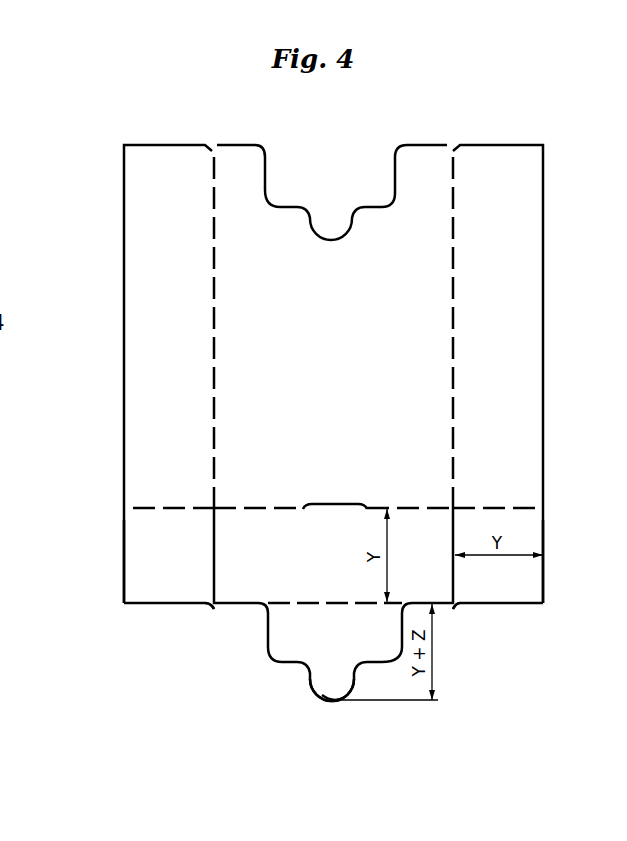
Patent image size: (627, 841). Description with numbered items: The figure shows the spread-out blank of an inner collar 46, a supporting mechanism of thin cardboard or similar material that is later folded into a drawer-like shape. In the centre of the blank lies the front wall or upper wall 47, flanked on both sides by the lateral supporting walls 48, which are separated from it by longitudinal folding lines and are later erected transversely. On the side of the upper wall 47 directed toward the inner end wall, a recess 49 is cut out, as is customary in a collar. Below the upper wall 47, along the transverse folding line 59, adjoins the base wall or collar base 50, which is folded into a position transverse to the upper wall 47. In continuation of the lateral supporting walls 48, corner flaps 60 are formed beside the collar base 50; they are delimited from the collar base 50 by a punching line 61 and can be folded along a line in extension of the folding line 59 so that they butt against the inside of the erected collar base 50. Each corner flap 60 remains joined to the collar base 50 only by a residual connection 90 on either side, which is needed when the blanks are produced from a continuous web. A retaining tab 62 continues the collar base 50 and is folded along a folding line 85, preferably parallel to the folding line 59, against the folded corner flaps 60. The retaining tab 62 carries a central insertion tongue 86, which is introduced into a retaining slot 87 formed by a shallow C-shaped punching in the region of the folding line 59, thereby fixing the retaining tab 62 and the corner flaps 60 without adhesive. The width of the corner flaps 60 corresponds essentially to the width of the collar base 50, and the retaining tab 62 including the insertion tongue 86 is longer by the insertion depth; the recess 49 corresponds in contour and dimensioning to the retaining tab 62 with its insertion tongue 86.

The inner collar 46 is at (565, 329).
The upper wall 47 is at (323, 355).
The lateral supporting walls 48 is at (151, 357).
The recess 49 is at (335, 188).
The collar base 50 is at (283, 558).
The folding line 59 is at (412, 508).
The corner flaps 60 is at (153, 575).
The punching line 61 is at (214, 537).
The retaining tab 62 is at (256, 675).
The folding line 85 is at (336, 603).
The insertion tongue 86 is at (333, 685).
The retaining slot 87 is at (333, 505).
The residual connections 90 is at (214, 606).